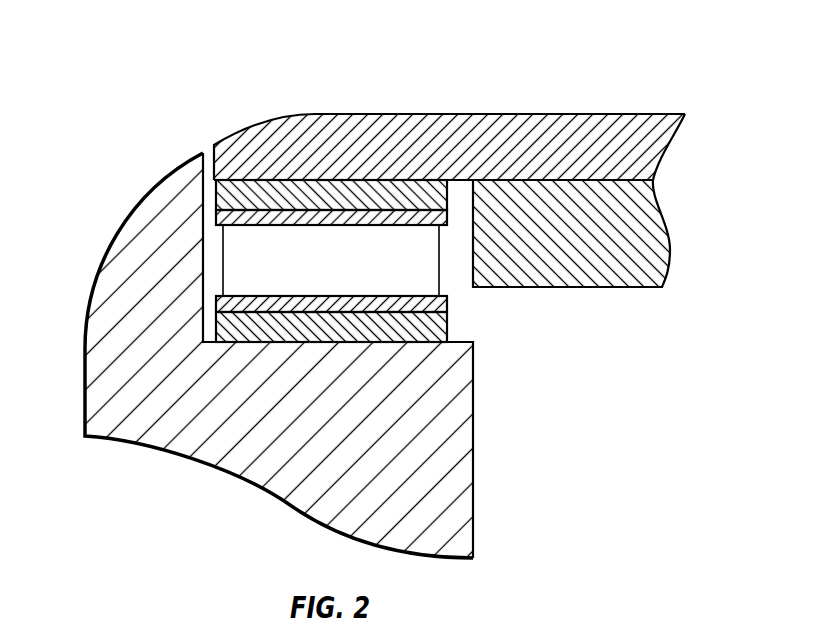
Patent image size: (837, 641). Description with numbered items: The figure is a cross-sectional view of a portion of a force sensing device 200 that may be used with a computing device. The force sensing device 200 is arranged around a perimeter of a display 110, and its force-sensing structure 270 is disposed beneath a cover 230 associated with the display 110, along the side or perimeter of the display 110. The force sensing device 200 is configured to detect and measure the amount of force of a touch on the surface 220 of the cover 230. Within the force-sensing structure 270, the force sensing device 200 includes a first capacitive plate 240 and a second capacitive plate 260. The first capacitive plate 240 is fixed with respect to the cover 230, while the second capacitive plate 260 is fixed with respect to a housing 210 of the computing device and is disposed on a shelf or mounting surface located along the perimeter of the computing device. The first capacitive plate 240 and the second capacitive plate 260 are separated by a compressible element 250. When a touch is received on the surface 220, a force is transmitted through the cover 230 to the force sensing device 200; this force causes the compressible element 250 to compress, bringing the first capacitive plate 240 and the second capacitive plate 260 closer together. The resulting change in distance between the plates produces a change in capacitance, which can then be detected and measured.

The force sensing device 200 is at (80, 69).
The housing 210 is at (158, 186).
The surface 220 is at (313, 114).
The cover 230 is at (547, 113).
The display 110 is at (670, 247).
The first capacitive plate 240 is at (215, 221).
The compressible element 250 is at (223, 263).
The second capacitive plate 260 is at (216, 303).
The force-sensing structure 270 is at (473, 324).